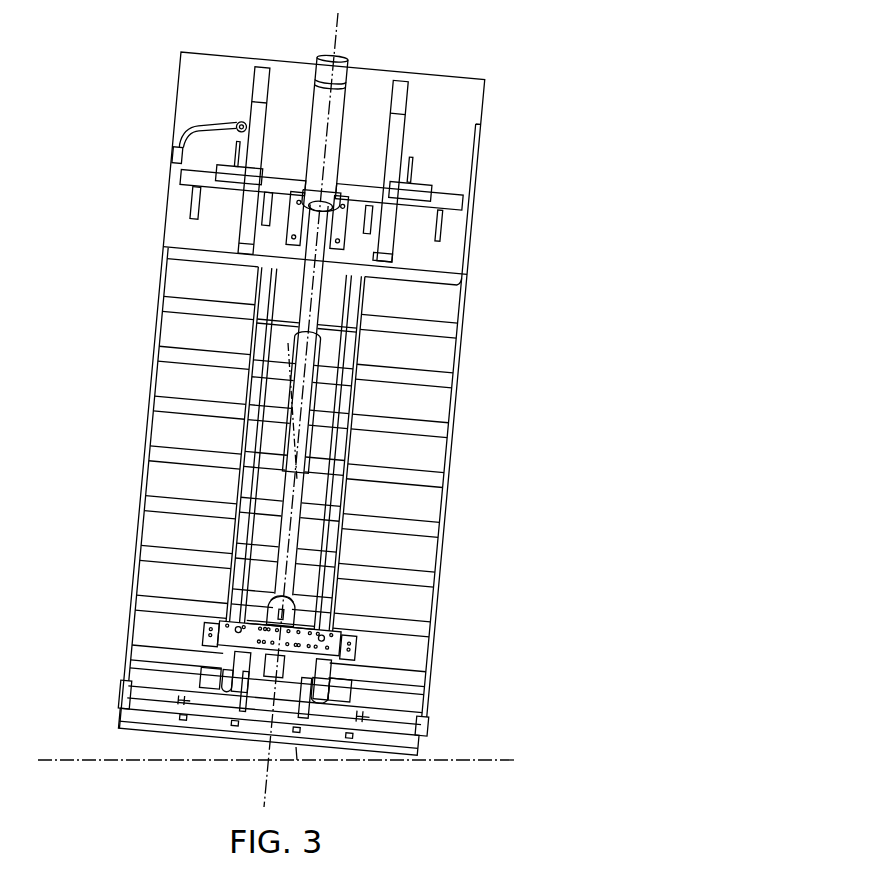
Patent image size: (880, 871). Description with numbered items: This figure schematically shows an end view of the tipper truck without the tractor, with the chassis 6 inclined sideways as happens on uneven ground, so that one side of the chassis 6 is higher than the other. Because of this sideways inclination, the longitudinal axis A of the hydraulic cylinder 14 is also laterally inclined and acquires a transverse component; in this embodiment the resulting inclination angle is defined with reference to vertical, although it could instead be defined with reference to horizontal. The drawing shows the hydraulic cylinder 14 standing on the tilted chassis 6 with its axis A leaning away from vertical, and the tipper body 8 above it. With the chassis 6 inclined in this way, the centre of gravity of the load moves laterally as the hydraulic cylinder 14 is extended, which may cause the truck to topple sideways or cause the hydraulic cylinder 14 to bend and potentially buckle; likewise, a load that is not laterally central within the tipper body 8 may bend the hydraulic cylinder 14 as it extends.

The tipper body 8 is at (316, 387).
The hydraulic cylinder 14 is at (308, 498).
The chassis 6 is at (421, 743).
The longitudinal axis A is at (338, 19).